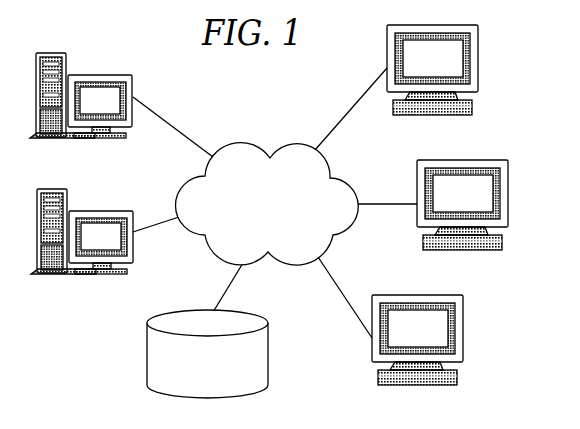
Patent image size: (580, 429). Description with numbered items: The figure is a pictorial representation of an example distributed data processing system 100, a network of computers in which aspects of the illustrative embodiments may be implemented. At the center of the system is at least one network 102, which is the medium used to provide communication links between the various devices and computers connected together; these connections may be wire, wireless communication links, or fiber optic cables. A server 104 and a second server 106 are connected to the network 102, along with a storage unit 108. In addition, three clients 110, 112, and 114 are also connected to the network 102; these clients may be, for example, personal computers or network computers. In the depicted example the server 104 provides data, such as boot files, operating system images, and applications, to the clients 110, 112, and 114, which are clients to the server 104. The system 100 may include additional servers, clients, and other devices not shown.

The distributed data processing system 100 is at (108, 337).
The network 102 is at (239, 144).
The server 104 is at (98, 75).
The server 106 is at (98, 210).
The storage unit 108 is at (268, 345).
The client 110 is at (478, 60).
The client 112 is at (508, 197).
The client 114 is at (465, 332).